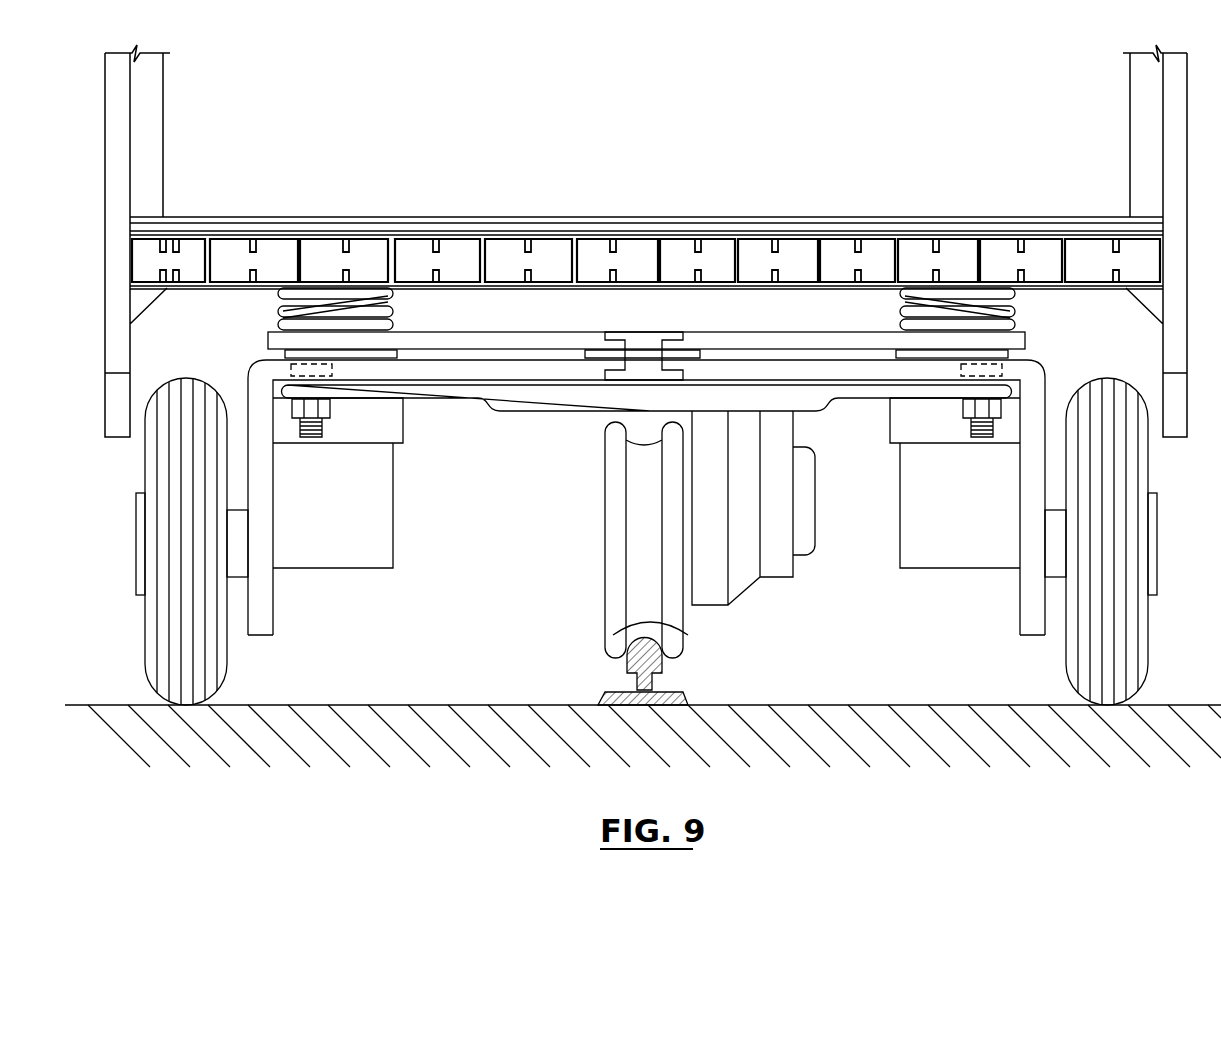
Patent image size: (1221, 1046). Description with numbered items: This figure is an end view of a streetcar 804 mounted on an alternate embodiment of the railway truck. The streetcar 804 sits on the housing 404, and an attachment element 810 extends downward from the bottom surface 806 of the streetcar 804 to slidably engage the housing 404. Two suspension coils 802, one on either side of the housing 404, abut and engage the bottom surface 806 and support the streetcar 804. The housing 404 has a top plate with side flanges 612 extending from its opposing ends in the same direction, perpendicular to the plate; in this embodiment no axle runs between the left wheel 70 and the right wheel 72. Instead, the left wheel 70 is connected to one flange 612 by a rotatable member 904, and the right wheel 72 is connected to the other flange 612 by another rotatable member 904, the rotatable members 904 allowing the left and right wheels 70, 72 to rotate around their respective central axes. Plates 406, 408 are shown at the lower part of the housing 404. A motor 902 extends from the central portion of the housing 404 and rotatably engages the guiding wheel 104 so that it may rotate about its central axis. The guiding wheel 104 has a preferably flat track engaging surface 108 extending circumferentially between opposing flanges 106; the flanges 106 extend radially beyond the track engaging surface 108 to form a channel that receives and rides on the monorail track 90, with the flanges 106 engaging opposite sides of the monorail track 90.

The streetcar 804 is at (866, 188).
The bottom surface 806 is at (713, 298).
The suspension coils 802 is at (393, 311).
The second housing 404 is at (1033, 365).
The left plate 406 is at (487, 397).
The right plate 408 is at (845, 397).
The attachment element 810 is at (632, 372).
The side flanges 612 is at (262, 600).
The rotatable member 904 is at (232, 517).
The left wheel 70 is at (236, 668).
The right wheel 72 is at (1066, 690).
The guiding wheel 104 is at (604, 592).
The flanges 106 is at (672, 643).
The track engaging surface 108 is at (623, 665).
The motor 902 is at (776, 562).
The monorail track 90 is at (660, 681).